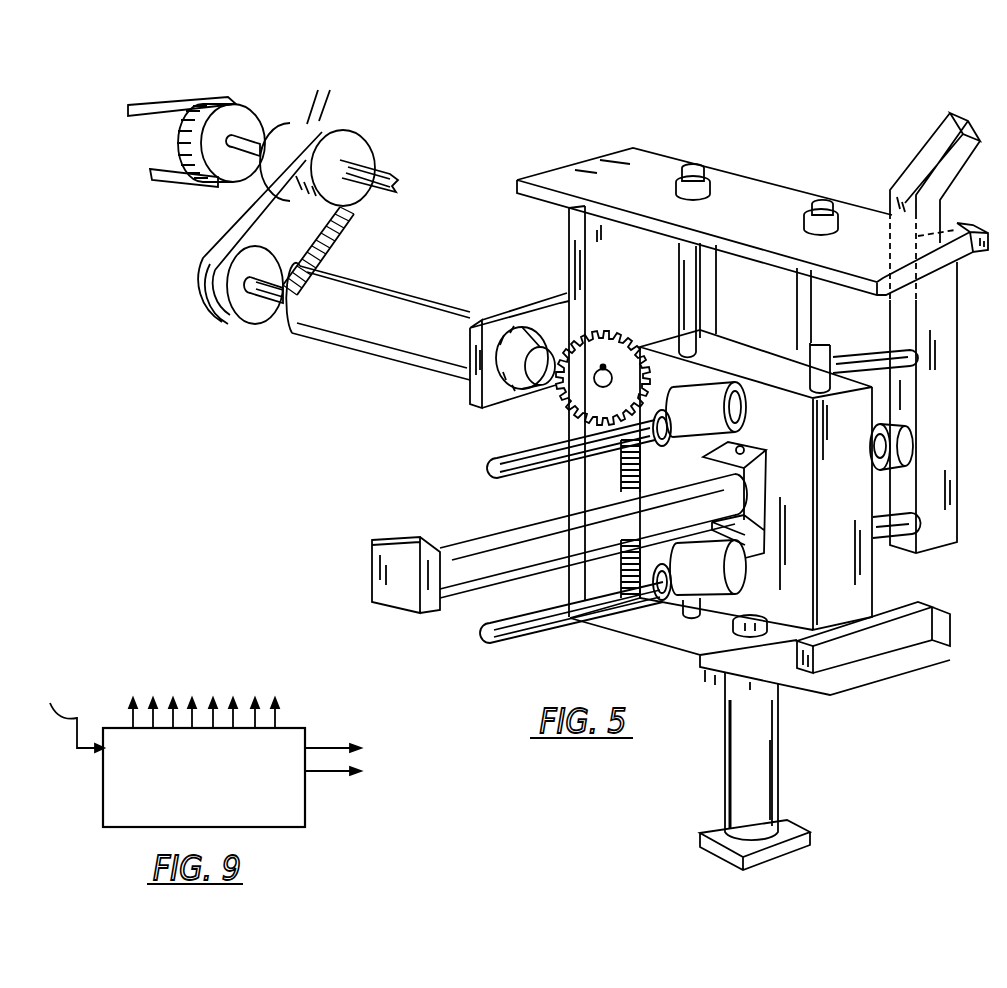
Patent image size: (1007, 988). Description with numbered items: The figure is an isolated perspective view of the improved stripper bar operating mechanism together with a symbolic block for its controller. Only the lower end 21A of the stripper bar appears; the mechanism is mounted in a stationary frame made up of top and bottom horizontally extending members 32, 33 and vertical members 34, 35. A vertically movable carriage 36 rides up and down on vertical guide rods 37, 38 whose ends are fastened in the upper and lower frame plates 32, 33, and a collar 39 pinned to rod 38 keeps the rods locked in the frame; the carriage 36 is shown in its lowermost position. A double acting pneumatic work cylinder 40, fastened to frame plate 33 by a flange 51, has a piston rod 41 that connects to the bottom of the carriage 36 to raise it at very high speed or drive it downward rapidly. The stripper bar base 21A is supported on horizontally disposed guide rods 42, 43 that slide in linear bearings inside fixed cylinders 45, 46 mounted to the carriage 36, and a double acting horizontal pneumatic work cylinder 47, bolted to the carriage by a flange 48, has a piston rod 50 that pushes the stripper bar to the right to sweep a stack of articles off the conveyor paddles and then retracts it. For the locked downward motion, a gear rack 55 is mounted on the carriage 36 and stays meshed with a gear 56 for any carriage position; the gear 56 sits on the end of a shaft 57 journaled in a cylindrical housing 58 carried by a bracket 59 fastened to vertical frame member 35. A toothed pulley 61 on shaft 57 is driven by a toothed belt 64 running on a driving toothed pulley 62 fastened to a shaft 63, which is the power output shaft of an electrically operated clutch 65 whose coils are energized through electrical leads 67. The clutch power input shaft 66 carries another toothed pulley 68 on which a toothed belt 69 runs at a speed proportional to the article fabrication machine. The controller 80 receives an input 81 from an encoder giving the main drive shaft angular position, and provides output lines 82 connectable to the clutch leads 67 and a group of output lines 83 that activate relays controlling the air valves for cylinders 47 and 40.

In FIG. 5, the lower end of stripper bar 21A is at (937, 148).
In FIG. 5, the top horizontally extending frame member 32 is at (650, 181).
In FIG. 5, the bottom horizontally extending frame member 33 is at (853, 678).
In FIG. 5, the vertical frame member 34 is at (933, 292).
In FIG. 5, the vertical frame member 35 is at (569, 232).
In FIG. 5, the vertically movable carriage 36 is at (861, 587).
In FIG. 5, the vertical guide rod 37 is at (678, 279).
In FIG. 5, the vertical guide rod 38 is at (808, 355).
In FIG. 5, the collar 39 is at (693, 184).
In FIG. 5, the double acting pneumatic work cylinder 40 is at (768, 762).
In FIG. 5, the piston rod 41 is at (745, 621).
In FIG. 5, the horizontal guide rod 42 is at (886, 368).
In FIG. 5, the horizontal guide rod 43 is at (880, 536).
In FIG. 5, the fixed cylinder 45 is at (694, 393).
In FIG. 5, the fixed cylinder 46 is at (668, 608).
In FIG. 5, the horizontal pneumatic work cylinder 47 is at (502, 530).
In FIG. 5, the flange 48 is at (748, 447).
In FIG. 5, the piston rod 50 is at (903, 444).
In FIG. 5, the flange 51 is at (707, 664).
In FIG. 5, the gear rack 55 is at (617, 474).
In FIG. 5, the gear 56 is at (561, 405).
In FIG. 5, the shaft 57 is at (503, 406).
In FIG. 5, the cylindrical housing 58 is at (396, 292).
In FIG. 5, the bracket 59 is at (520, 307).
In FIG. 5, the toothed pulley 61 is at (256, 320).
In FIG. 5, the toothed pulley 62 is at (356, 146).
In FIG. 5, the shaft 63 is at (386, 172).
In FIG. 5, the toothed belt 64 is at (348, 217).
In FIG. 5, the electrically operated clutch 65 is at (282, 127).
In FIG. 5, the power input shaft 66 is at (245, 133).
In FIG. 5, the electrical leads 67 is at (326, 103).
In FIG. 5, the toothed pulley 68 is at (196, 128).
In FIG. 5, the toothed belt 69 is at (160, 103).
In FIG. 9, the timing and logic controller 80 is at (103, 792).
In FIG. 9, the input 81 is at (65, 717).
In FIG. 9, the output lines 82 is at (362, 758).
In FIG. 9, the output lines 83 is at (230, 692).